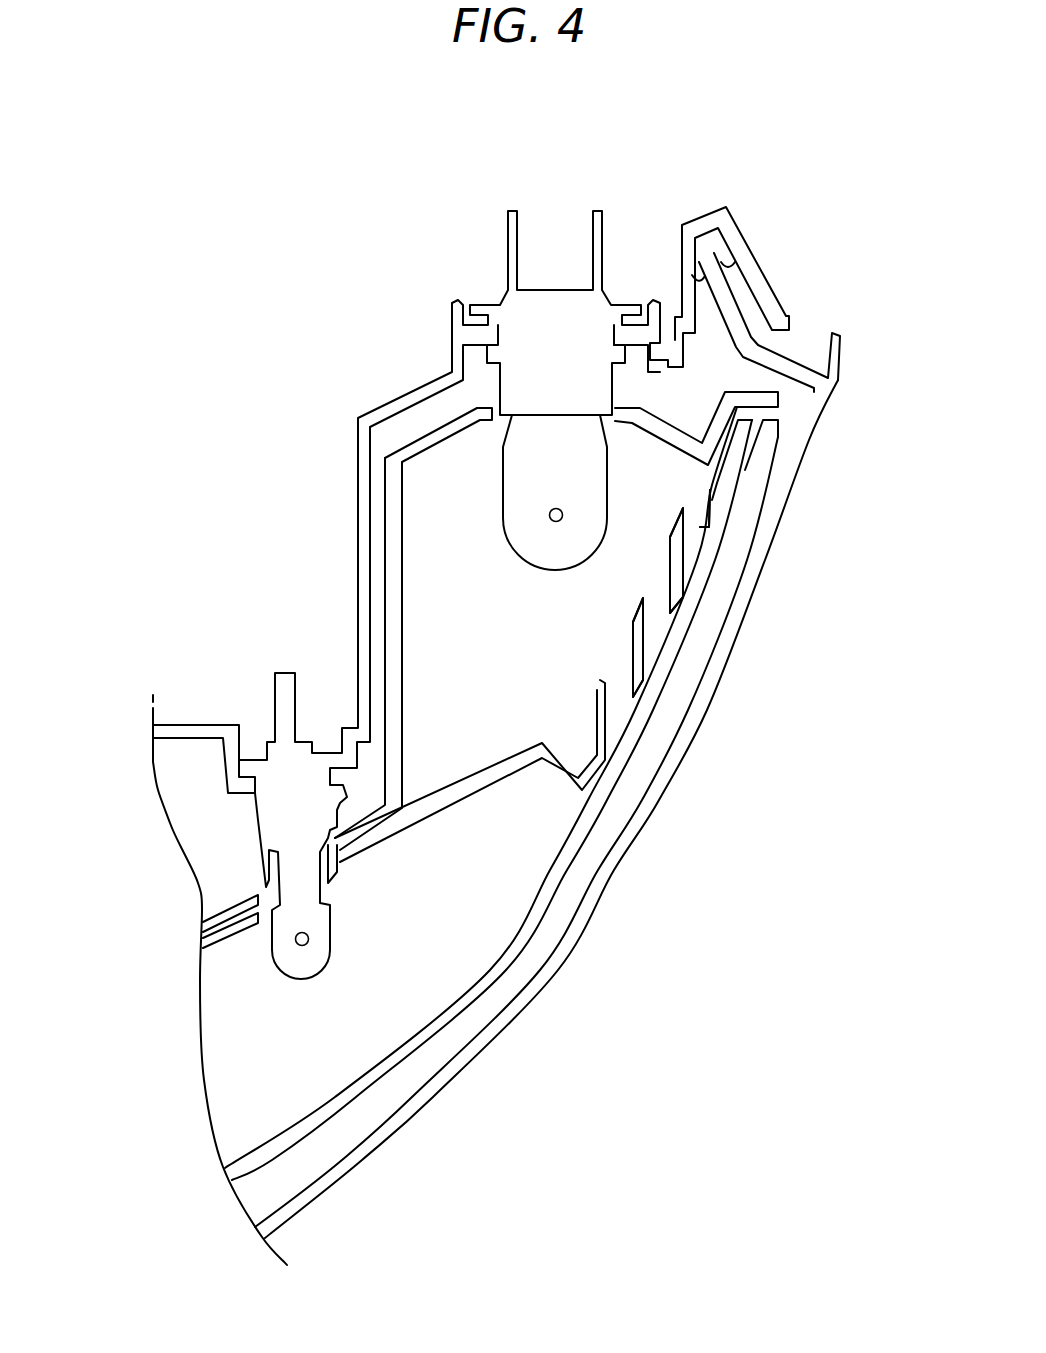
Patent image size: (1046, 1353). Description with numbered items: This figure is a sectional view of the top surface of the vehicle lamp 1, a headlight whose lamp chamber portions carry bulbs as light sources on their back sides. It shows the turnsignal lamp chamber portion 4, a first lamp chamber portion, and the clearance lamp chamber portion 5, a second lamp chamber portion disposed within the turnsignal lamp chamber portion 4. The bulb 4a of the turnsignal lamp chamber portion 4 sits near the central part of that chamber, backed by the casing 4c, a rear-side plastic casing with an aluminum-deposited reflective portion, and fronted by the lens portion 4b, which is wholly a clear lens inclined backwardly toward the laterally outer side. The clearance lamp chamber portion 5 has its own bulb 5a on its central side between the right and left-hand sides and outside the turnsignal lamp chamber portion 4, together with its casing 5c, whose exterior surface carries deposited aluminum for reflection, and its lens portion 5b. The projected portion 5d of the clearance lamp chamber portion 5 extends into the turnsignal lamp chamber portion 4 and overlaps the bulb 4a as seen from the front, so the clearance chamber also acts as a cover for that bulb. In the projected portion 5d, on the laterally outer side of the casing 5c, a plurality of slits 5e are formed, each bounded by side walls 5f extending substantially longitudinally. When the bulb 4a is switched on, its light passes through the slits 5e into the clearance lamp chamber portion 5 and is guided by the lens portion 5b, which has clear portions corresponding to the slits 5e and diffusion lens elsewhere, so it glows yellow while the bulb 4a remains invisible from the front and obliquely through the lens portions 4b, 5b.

The vehicle lamp 1 is at (838, 214).
The turnsignal lamp chamber portion 4 is at (435, 636).
The bulb 4a is at (549, 515).
The lens portion 4b is at (428, 1093).
The casing 4c is at (390, 573).
The clearance lamp chamber portion 5 is at (293, 1098).
The bulb 5a is at (295, 939).
The lens portion 5b is at (508, 955).
The casing 5c is at (468, 787).
The projected portion 5d is at (548, 837).
The slits 5e is at (697, 528).
The side walls 5f is at (711, 490).